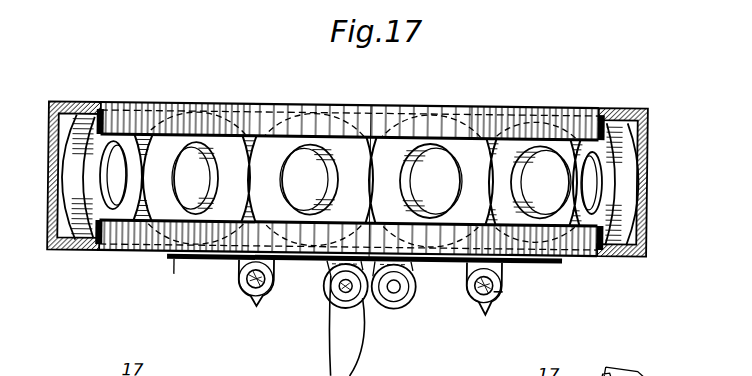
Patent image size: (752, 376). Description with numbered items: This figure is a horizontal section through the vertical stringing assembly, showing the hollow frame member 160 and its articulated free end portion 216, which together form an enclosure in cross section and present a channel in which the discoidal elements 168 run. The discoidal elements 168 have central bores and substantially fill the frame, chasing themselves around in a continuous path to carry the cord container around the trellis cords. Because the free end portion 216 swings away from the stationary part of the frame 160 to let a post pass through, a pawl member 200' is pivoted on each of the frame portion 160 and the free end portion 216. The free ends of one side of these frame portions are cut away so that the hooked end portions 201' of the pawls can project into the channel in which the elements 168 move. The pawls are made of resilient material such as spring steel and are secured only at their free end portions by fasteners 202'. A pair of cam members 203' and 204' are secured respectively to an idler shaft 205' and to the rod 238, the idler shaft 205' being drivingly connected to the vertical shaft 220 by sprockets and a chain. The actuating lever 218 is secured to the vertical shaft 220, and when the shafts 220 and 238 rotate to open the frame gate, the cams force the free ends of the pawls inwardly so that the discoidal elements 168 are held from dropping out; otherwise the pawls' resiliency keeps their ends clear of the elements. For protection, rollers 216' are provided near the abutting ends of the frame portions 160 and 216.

The hollow frame member 160 is at (649, 238).
The discoidal elements 168 is at (511, 152).
The hooked end portions 201' is at (362, 181).
The fasteners 202' is at (176, 278).
The free end portion 216 is at (364, 283).
The cam member 203' is at (251, 300).
The idler shaft 205' is at (231, 300).
The pawl member 200' is at (365, 288).
The vertical shaft 220 is at (345, 292).
The rollers 216' is at (396, 301).
The actuating lever 218 is at (358, 349).
The rod 238 is at (483, 299).
The cam member 204' is at (522, 295).